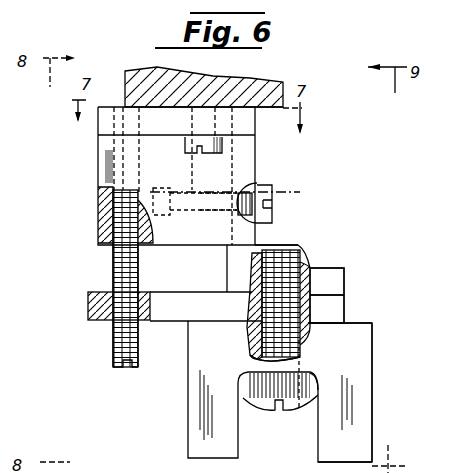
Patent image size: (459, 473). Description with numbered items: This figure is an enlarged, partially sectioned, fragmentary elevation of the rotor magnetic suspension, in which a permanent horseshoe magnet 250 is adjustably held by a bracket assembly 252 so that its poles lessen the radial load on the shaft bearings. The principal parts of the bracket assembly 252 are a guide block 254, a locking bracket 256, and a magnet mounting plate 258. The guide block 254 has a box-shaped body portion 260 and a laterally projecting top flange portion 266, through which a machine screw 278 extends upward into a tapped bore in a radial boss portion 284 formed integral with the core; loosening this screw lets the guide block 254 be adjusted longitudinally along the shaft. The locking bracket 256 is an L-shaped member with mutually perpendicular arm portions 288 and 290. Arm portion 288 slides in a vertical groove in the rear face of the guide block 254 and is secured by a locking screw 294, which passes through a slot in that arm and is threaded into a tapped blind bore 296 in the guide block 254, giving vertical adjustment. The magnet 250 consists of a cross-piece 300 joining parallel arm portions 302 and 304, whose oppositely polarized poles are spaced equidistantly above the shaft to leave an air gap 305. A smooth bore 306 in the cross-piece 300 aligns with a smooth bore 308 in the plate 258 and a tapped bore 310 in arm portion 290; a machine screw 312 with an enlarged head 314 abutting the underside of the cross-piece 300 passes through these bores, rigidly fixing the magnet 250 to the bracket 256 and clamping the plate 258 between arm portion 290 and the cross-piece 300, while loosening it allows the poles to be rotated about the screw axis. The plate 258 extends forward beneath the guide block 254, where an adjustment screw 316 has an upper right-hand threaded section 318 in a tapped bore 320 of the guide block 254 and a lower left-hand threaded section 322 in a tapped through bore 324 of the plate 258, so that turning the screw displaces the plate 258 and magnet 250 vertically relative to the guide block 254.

The permanent horseshoe magnet 250 is at (373, 387).
The bracket assembly 252 is at (298, 223).
The guide block 254 is at (258, 155).
The locking bracket 256 is at (346, 268).
The magnet mounting plate 258 is at (97, 305).
The body portion 260 is at (258, 172).
The flange portion 266 is at (182, 125).
The machine screw 278 is at (173, 165).
The radial boss portion 284 is at (265, 90).
The arm portion 288 is at (237, 252).
The arm portion 290 is at (337, 268).
The locking screw 294 is at (272, 194).
The tapped blind bore 296 is at (230, 200).
The cross-piece 300 is at (362, 353).
The arm portion 302 is at (195, 410).
The arm portion 304 is at (363, 405).
The air gap 305 is at (336, 465).
The bore 306 is at (250, 342).
The bore 308 is at (295, 305).
The tapped bore 310 is at (310, 282).
The machine screw 312 is at (283, 252).
The enlarged head 314 is at (266, 410).
The adjustment screw 316 is at (112, 252).
The upper right hand threaded section 318 is at (117, 212).
The tapped bore 320 is at (120, 228).
The lower left hand threaded section 322 is at (117, 333).
The tapped through bore 324 is at (131, 302).